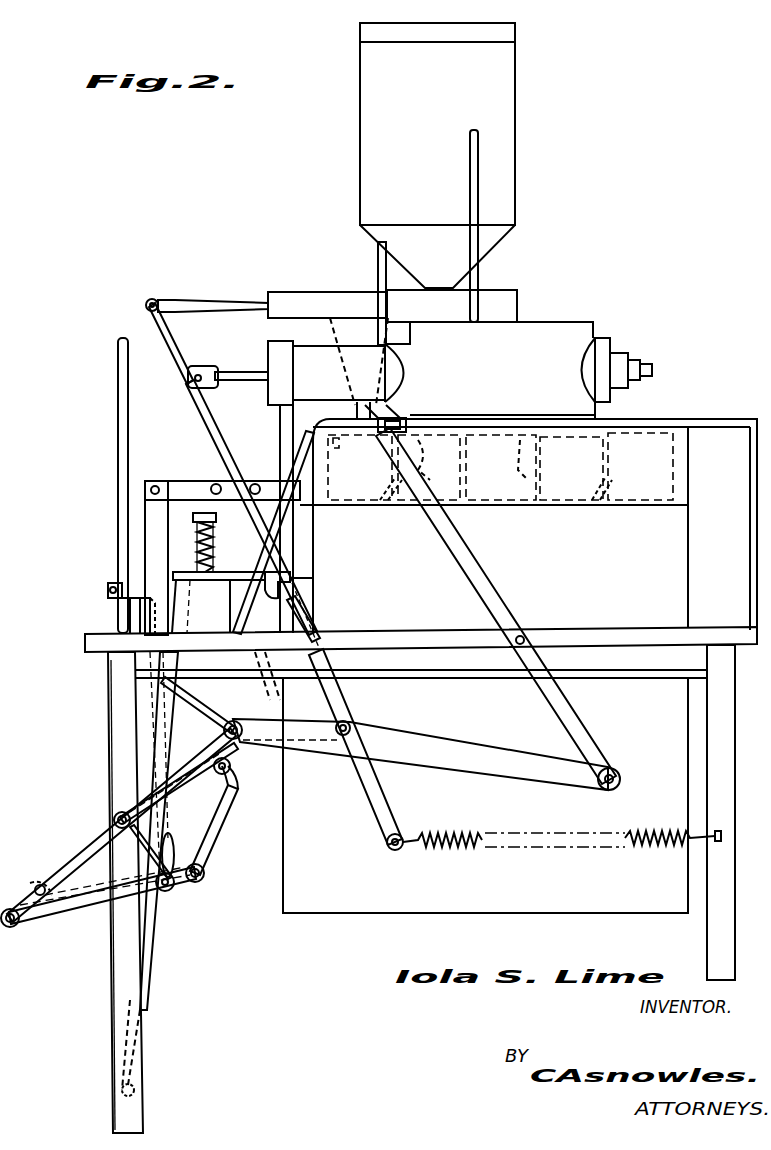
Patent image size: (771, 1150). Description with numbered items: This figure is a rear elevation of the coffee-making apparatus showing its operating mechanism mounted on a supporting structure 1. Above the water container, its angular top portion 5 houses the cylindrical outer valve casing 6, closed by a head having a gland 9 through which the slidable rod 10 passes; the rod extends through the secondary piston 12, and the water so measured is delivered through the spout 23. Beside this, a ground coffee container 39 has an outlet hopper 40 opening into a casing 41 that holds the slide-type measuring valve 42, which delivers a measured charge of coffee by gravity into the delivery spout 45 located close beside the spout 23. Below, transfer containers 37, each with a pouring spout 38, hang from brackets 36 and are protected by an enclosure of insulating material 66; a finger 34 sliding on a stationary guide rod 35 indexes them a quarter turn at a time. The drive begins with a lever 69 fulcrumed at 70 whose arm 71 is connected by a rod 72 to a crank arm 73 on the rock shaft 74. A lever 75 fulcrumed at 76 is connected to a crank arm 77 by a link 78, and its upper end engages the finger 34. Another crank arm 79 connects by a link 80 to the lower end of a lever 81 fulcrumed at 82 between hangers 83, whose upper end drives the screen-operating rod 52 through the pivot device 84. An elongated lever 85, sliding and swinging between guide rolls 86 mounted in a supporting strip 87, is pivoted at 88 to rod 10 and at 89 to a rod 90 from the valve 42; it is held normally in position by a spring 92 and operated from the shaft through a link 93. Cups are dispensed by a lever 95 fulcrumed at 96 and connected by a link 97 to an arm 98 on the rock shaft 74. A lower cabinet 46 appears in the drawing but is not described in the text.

The supporting structure 1 is at (115, 955).
The angular top portion 5 is at (566, 320).
The cylindrical outer valve casing 6 is at (610, 340).
The gland 9 is at (635, 353).
The slidable rod 10 is at (652, 368).
The secondary piston 12 is at (336, 487).
The spout 23 is at (356, 412).
The finger 34 is at (402, 418).
The stationary guide rod 35 is at (660, 418).
The brackets 36 is at (385, 490).
The transfer container 37 is at (515, 432).
The pouring spout 38 is at (500, 466).
The ground coffee container 39 is at (505, 142).
The outlet hopper 40 is at (495, 238).
The casing 41 is at (318, 292).
The measuring valve 42 is at (480, 190).
The delivery spout 45 is at (370, 361).
The cabinet 46 is at (485, 795).
The screen-operating rod 52 is at (310, 575).
The enclosure of insulating material 66 is at (690, 478).
The lever 69 is at (118, 510).
The fulcrum 70 is at (108, 590).
The arm 71 is at (130, 606).
The rod 72 is at (150, 703).
The crank arm 73 is at (172, 838).
The rock shaft 74 is at (115, 818).
The lever 75 is at (470, 558).
The fulcrum 76 is at (528, 636).
The crank arm 77 is at (210, 795).
The link 78 is at (455, 755).
The crank arm 79 is at (70, 853).
The link 80 is at (68, 910).
The lever 81 is at (212, 840).
The fulcrum 82 is at (232, 766).
The hangers 83 is at (198, 713).
The pivot device 84 is at (292, 592).
The elongated lever 85 is at (208, 418).
The guide rolls 86 is at (210, 485).
The supporting strip 87 is at (180, 481).
The pivot 88 is at (200, 365).
The pivot 89 is at (157, 302).
The rod 90 is at (228, 302).
The spring 92 is at (468, 845).
The link 93 is at (322, 716).
The lever 95 is at (152, 923).
The fulcrum 96 is at (137, 1090).
The link 97 is at (92, 905).
The arm 98 is at (38, 885).